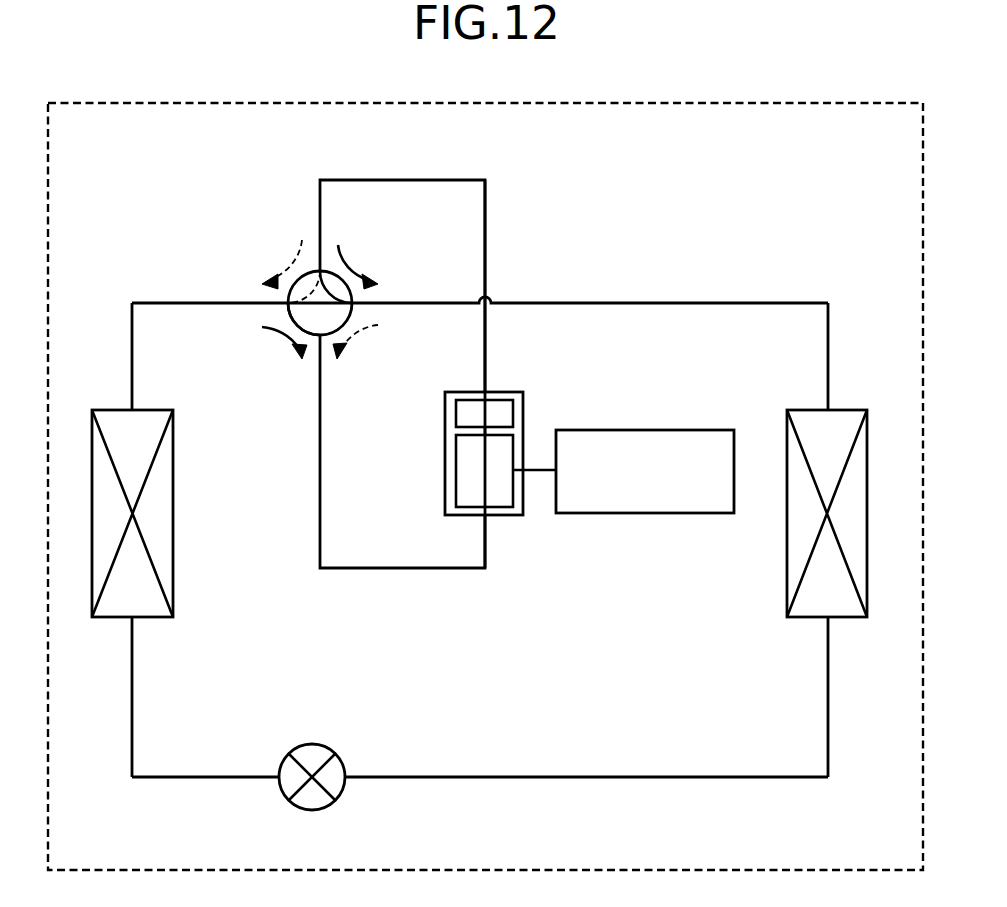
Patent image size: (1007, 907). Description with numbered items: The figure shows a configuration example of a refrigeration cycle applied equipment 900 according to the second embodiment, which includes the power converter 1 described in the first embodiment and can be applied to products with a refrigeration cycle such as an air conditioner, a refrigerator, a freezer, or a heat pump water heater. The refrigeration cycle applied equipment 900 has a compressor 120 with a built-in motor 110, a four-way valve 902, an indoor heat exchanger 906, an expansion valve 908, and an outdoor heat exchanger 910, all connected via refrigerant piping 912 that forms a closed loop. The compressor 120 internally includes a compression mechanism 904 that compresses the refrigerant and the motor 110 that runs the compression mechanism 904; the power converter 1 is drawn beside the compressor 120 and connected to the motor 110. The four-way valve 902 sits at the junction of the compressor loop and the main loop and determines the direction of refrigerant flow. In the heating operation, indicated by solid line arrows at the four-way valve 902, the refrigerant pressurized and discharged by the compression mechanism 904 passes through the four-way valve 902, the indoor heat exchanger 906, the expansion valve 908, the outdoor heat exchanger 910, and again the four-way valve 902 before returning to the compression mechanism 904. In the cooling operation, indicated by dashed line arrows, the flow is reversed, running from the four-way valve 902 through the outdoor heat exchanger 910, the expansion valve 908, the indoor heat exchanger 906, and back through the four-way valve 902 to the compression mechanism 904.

The refrigeration cycle applied equipment 900 is at (635, 103).
The four-way valve 902 is at (316, 270).
The compression mechanism 904 is at (456, 409).
The indoor heat exchanger 906 is at (838, 410).
The expansion valve 908 is at (318, 746).
The outdoor heat exchanger 910 is at (143, 410).
The refrigerant piping 912 is at (540, 777).
The compressor 120 is at (505, 391).
The motor 110 is at (456, 479).
The power converter 1 is at (648, 430).